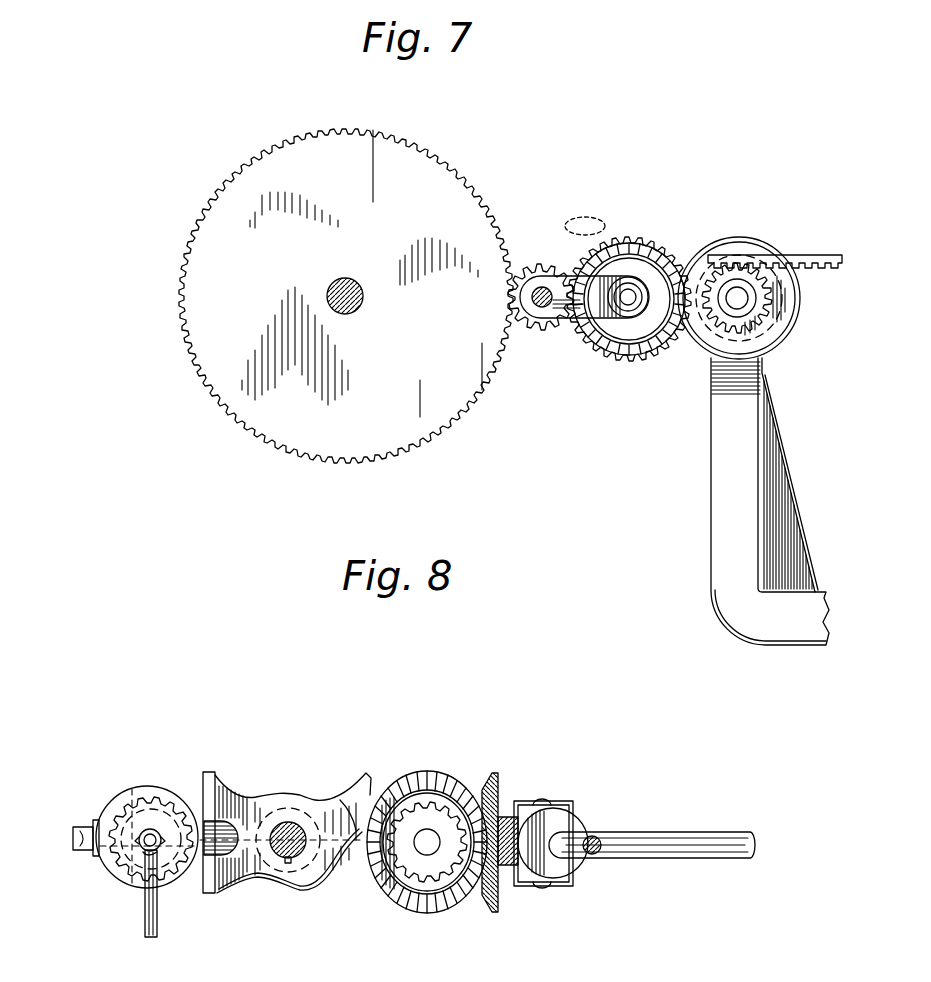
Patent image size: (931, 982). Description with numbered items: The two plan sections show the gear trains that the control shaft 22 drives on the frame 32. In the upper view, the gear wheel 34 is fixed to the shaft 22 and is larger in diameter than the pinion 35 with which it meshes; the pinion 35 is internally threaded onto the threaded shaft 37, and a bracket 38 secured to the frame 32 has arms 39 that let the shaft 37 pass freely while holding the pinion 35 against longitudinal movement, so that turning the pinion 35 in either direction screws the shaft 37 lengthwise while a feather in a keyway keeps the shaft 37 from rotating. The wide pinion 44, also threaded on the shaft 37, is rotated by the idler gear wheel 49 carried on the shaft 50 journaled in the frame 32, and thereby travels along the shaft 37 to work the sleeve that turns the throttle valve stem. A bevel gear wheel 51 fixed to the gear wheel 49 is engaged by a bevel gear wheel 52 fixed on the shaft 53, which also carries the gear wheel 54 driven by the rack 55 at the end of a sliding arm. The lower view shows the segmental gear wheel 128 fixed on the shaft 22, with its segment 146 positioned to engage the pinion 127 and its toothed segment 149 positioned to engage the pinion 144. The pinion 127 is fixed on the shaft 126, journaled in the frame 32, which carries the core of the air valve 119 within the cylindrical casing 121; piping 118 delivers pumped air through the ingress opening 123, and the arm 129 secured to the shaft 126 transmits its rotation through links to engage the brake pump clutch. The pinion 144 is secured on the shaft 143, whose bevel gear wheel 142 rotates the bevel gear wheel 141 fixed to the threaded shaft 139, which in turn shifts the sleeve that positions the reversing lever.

In FIG. 7, the shaft 22 is at (352, 284).
In FIG. 8, the shaft 22 is at (290, 835).
In FIG. 7, the frame 32 is at (718, 495).
In FIG. 8, the frame 32 is at (563, 887).
In FIG. 7, the gear wheel 34 is at (213, 249).
In FIG. 7, the pinion 35 is at (543, 262).
In FIG. 8, the shaft 37 is at (600, 840).
In FIG. 7, the bracket 38 is at (632, 288).
In FIG. 7, the arms 39 is at (583, 308).
In FIG. 7, the wide pinion 44 is at (556, 268).
In FIG. 7, the gear wheel 49 is at (596, 362).
In FIG. 7, the shaft 50 is at (645, 290).
In FIG. 7, the bevel gear wheel 51 is at (652, 355).
In FIG. 7, the bevel gear wheel 52 is at (726, 240).
In FIG. 7, the shaft 53 is at (738, 312).
In FIG. 7, the gear wheel 54 is at (768, 312).
In FIG. 7, the rack 55 is at (797, 257).
In FIG. 8, the piping 118 is at (75, 838).
In FIG. 8, the valve 119 is at (147, 827).
In FIG. 8, the cylindrical casing 121 is at (112, 878).
In FIG. 8, the opening 123 is at (95, 820).
In FIG. 8, the shaft 126 is at (150, 858).
In FIG. 8, the pinion 127 is at (140, 852).
In FIG. 8, the segmental gear wheel 128 is at (297, 882).
In FIG. 8, the arm 129 is at (148, 937).
In FIG. 8, the shaft 139 is at (718, 836).
In FIG. 8, the bevel gear wheel 141 is at (493, 913).
In FIG. 8, the bevel gear wheel 142 is at (435, 912).
In FIG. 8, the shaft 143 is at (433, 803).
In FIG. 8, the pinion 144 is at (420, 900).
In FIG. 8, the segment 146 is at (203, 795).
In FIG. 8, the toothed segment 149 is at (352, 795).